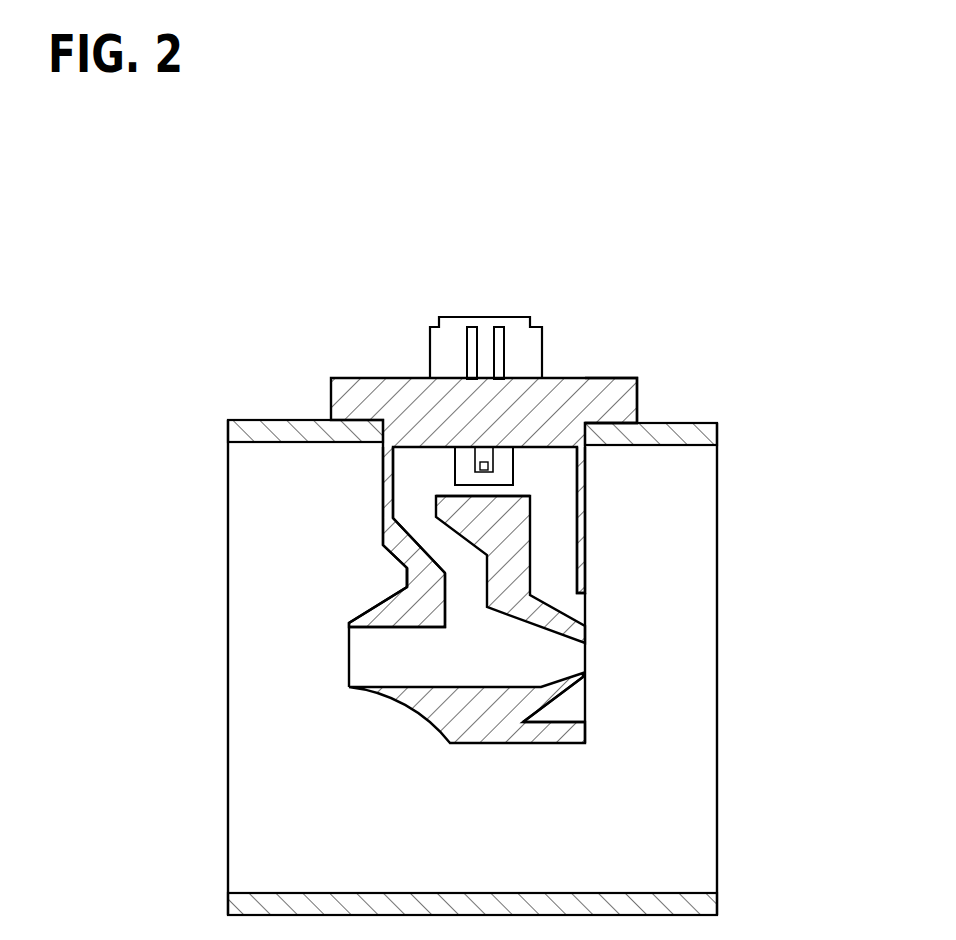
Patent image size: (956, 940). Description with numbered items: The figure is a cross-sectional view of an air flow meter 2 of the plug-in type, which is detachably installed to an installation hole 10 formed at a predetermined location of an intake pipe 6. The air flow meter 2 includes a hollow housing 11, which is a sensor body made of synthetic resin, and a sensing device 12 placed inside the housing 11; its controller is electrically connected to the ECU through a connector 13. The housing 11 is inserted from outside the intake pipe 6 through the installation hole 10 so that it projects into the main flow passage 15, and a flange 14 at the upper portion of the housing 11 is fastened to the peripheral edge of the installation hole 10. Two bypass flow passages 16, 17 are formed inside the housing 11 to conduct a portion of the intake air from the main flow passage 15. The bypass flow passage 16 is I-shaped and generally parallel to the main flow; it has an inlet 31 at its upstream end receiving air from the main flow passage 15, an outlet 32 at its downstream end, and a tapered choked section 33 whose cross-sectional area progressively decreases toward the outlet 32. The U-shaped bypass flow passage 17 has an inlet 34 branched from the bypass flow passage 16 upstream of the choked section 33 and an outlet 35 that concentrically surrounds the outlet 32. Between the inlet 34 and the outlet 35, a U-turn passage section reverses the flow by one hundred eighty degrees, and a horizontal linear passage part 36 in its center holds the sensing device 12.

The air flow meter 2 is at (476, 494).
The intake pipe 6 is at (462, 619).
The installation hole 10 is at (469, 467).
The housing 11 is at (585, 542).
The sensing device 12 is at (480, 457).
The connector 13 is at (502, 315).
The flange 14 is at (623, 402).
The main flow passage 15 is at (525, 851).
The bypass flow passage 16 is at (503, 673).
The bypass flow passage 17 is at (408, 484).
The inlet 31 is at (466, 701).
The outlet 32 is at (626, 581).
The choked section 33 is at (567, 678).
The inlet 34 is at (460, 603).
The outlet 35 is at (585, 612).
The linear passage part 36 is at (487, 495).